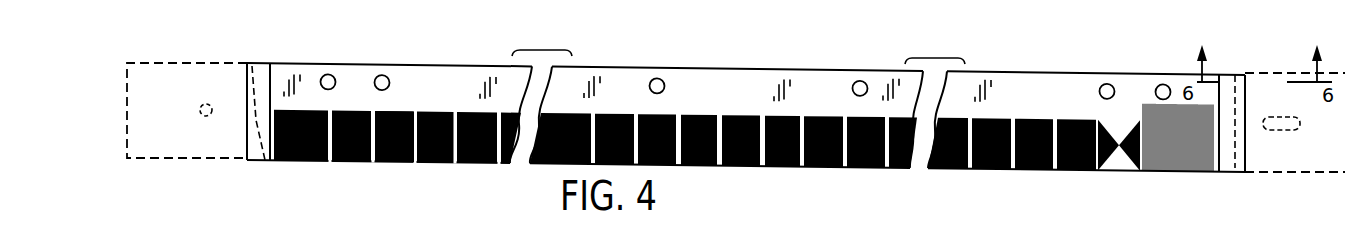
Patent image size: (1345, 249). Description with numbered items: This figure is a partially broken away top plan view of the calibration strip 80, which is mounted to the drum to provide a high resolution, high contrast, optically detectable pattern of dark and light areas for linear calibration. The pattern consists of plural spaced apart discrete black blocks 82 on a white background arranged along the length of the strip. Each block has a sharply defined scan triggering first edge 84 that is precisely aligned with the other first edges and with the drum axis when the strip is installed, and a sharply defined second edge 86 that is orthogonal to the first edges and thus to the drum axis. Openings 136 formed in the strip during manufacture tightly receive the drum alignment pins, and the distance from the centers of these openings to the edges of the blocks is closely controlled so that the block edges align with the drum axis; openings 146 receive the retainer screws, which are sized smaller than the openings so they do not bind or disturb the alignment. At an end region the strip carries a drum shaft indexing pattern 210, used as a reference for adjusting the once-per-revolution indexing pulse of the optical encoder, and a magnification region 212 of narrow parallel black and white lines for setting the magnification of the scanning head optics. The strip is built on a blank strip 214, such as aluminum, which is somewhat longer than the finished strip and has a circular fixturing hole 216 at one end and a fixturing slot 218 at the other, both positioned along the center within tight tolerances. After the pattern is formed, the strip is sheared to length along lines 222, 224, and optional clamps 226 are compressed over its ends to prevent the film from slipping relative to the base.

The calibration strip 80 is at (723, 73).
The blocks 82 is at (472, 165).
The first edges 84 is at (468, 110).
The second edges 86 is at (412, 165).
The openings 136 is at (1158, 87).
The openings 146 is at (1103, 87).
The drum shaft indexing pattern 210 is at (1118, 170).
The magnification region 212 is at (1166, 170).
The blank strip 214 is at (168, 160).
The circular fixturing hole 216 is at (205, 117).
The fixturing slot 218 is at (1296, 125).
The shear line 222 is at (265, 162).
The shear line 224 is at (1234, 96).
The clamps 226 is at (1238, 110).